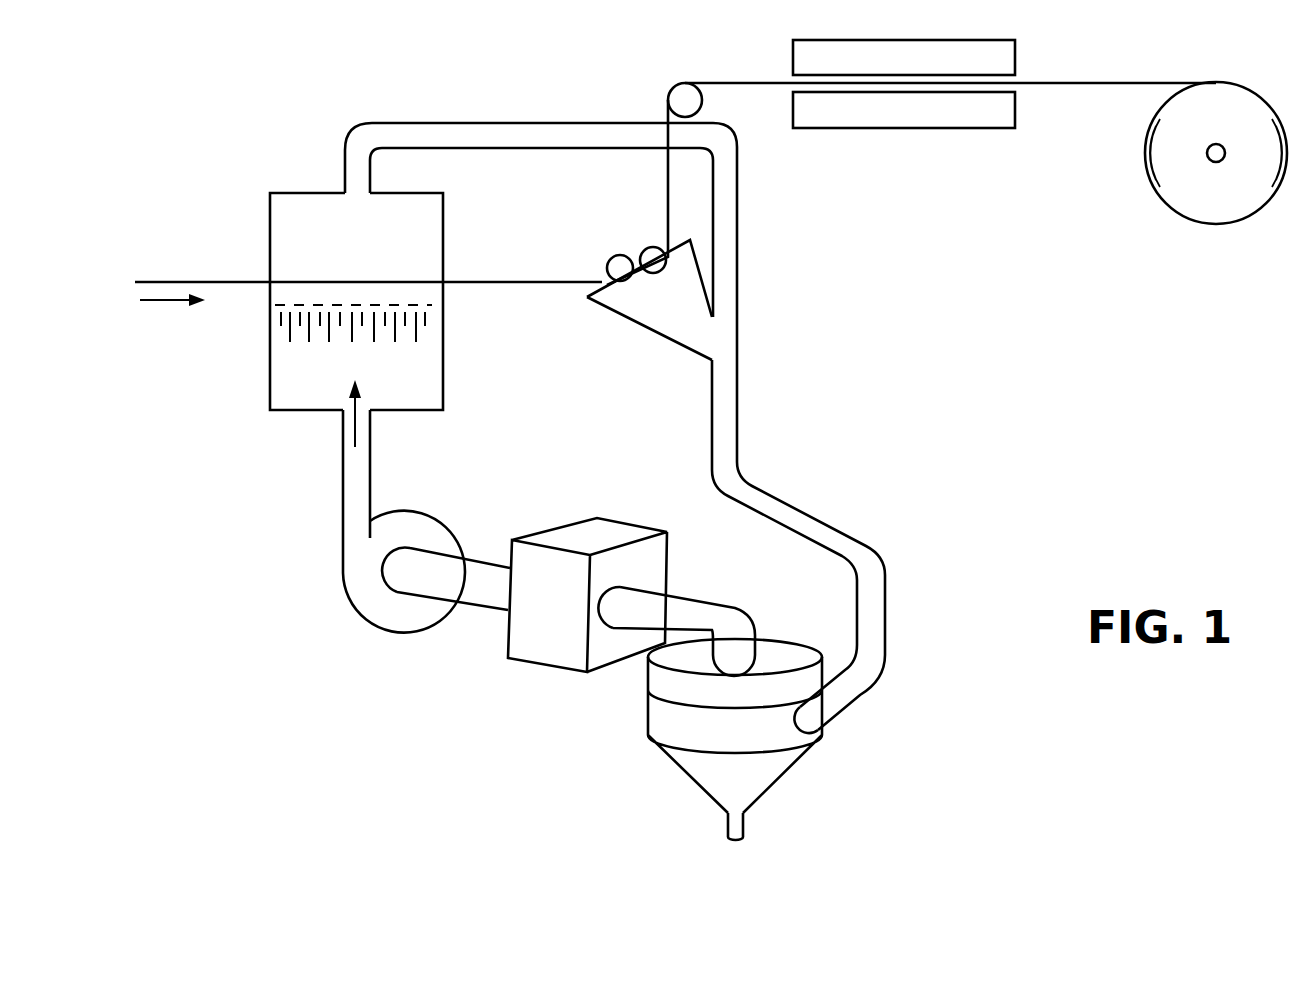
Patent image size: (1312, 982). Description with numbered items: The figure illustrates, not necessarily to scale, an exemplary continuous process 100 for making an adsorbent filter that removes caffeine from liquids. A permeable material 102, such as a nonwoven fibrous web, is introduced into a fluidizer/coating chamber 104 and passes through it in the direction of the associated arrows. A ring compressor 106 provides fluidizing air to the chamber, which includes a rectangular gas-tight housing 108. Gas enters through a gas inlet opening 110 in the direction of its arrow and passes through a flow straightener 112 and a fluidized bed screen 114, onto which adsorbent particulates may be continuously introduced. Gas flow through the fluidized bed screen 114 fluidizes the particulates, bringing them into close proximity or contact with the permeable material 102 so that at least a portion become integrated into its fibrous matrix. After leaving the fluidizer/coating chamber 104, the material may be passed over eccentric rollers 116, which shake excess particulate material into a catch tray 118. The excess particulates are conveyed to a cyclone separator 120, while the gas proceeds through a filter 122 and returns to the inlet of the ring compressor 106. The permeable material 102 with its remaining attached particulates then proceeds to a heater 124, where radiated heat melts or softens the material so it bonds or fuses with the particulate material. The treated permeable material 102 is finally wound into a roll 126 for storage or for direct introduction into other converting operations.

The continuous process for making an adsorbent filter 100 is at (1178, 440).
The permeable material 102 is at (187, 282).
The fluidizer/coating chamber 104 is at (238, 454).
The ring compressor 106 is at (368, 633).
The rectangular gas-tight housing 108 is at (290, 192).
The gas inlet opening 110 is at (372, 430).
The flow straightener 112 is at (435, 325).
The fluidized bed screen 114 is at (430, 299).
The eccentric rollers 116 is at (622, 228).
The catch tray 118 is at (658, 318).
The cyclone separator 120 is at (748, 746).
The filter 122 is at (575, 619).
The heater 124 is at (1052, 52).
The roll 126 is at (1157, 205).